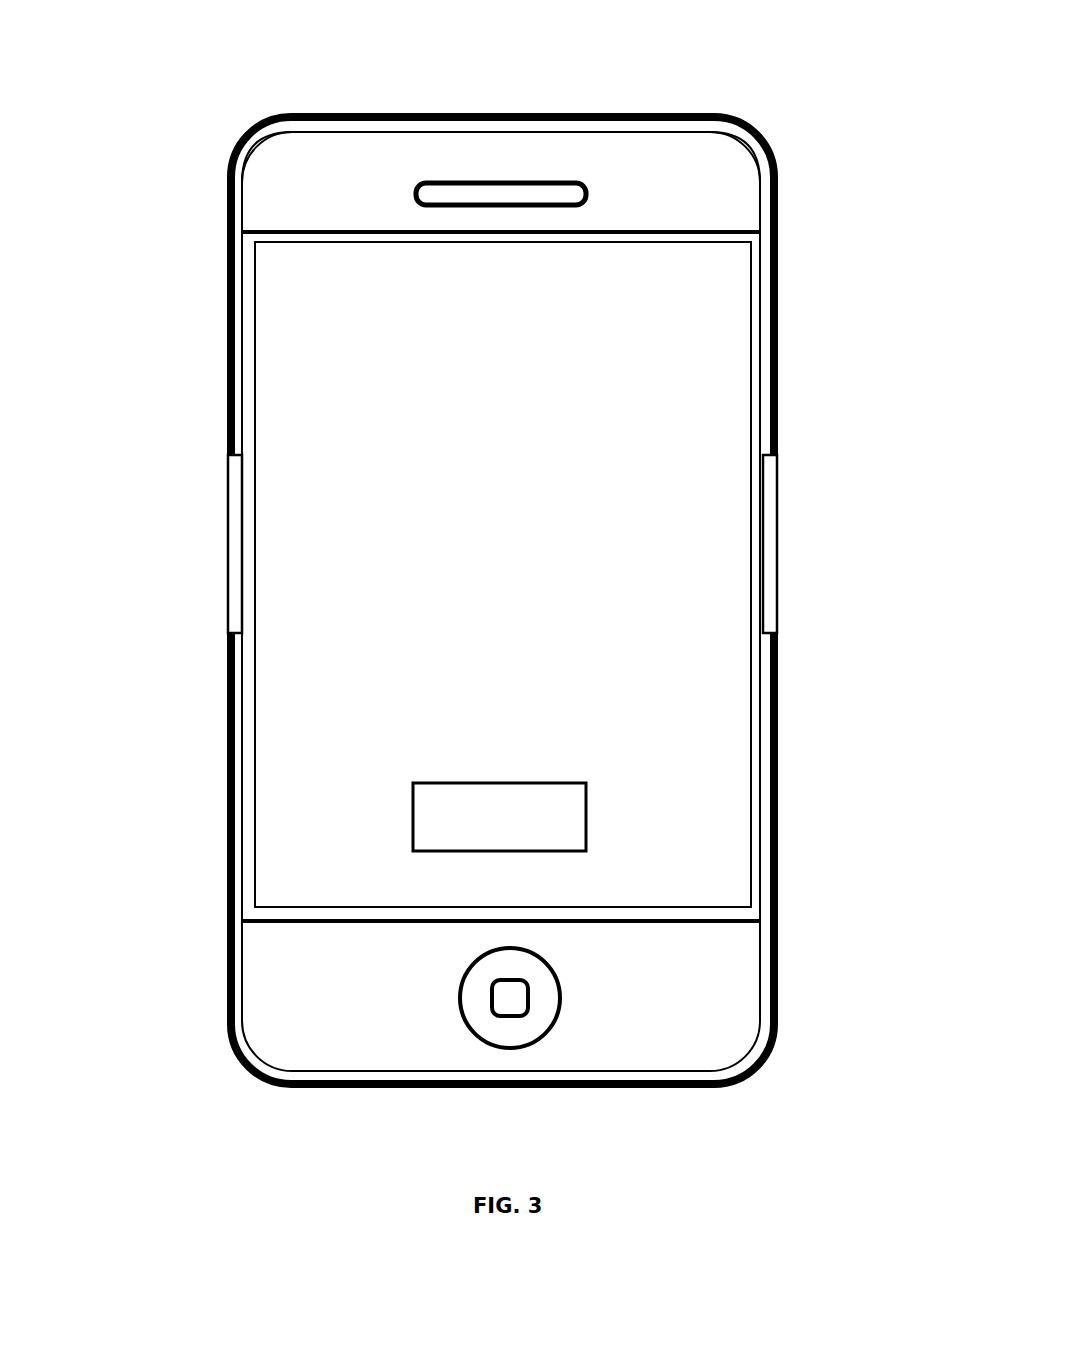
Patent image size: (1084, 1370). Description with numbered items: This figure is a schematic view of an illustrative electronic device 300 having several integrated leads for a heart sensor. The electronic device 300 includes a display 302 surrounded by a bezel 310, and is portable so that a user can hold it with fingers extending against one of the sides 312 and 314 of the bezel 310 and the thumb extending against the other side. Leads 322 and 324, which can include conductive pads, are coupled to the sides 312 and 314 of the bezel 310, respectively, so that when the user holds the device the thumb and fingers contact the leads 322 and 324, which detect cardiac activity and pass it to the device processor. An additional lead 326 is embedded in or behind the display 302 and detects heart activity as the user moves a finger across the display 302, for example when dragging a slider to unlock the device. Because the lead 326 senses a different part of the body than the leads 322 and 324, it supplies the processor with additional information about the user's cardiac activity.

The electronic device 300 is at (668, 62).
The display 302 is at (722, 368).
The bezel 310 is at (238, 217).
The side of bezel 312 is at (228, 360).
The side of bezel 314 is at (778, 863).
The lead 322 is at (224, 560).
The lead 324 is at (770, 583).
The additional lead 326 is at (490, 783).